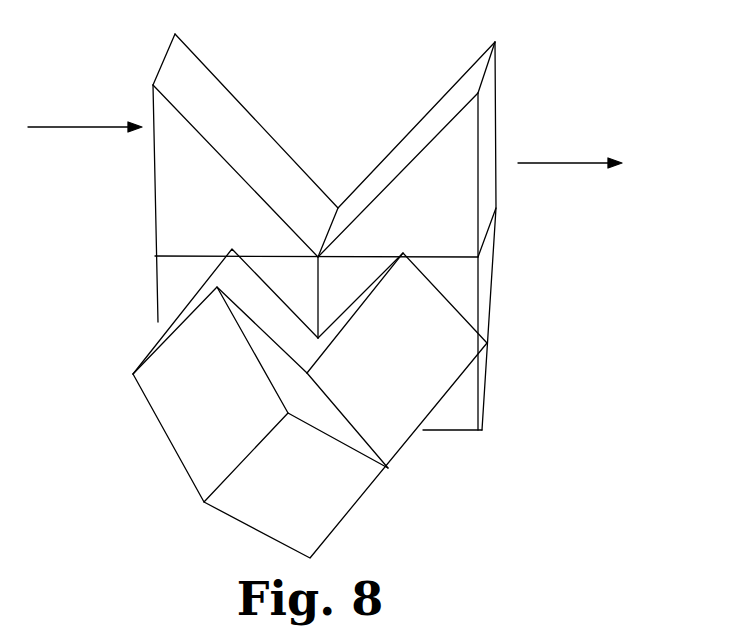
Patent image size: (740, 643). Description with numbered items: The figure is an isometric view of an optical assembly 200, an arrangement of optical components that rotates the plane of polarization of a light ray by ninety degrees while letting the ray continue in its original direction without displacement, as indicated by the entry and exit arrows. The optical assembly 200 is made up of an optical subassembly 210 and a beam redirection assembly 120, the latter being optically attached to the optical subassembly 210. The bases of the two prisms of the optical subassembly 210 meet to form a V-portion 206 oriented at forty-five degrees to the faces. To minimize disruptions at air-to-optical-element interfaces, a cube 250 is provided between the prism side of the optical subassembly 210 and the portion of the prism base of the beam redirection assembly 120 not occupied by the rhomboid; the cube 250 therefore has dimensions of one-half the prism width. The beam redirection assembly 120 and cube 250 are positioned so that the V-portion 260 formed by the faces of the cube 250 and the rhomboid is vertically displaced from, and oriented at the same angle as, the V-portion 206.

The optical assembly 200 is at (399, 215).
The V-portion 206 is at (331, 226).
The optical subassembly 210 is at (490, 98).
The cube 250 is at (153, 337).
The V-portion 260 is at (308, 365).
The beam redirection assembly 120 is at (360, 494).